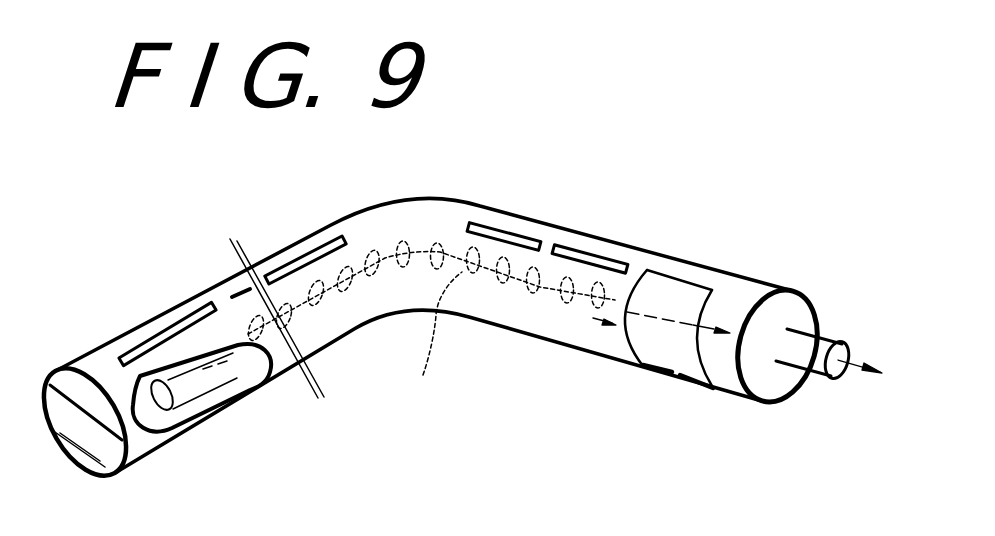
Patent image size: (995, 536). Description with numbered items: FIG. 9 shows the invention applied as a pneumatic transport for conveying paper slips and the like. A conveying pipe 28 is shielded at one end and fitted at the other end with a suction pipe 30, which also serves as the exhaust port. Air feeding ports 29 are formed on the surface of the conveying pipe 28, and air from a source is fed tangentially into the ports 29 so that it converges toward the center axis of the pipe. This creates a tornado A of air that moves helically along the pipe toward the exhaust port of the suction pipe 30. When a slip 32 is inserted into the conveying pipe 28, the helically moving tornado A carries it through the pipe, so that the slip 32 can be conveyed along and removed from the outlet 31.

The conveying pipe 28 is at (657, 255).
The air feeding ports 29 is at (190, 318).
The suction pipe 30 is at (812, 357).
The outlet 31 is at (645, 340).
The slip 32 is at (193, 388).
The tornado A is at (487, 326).